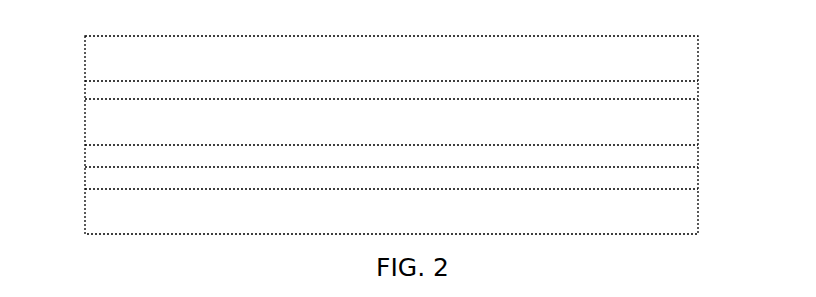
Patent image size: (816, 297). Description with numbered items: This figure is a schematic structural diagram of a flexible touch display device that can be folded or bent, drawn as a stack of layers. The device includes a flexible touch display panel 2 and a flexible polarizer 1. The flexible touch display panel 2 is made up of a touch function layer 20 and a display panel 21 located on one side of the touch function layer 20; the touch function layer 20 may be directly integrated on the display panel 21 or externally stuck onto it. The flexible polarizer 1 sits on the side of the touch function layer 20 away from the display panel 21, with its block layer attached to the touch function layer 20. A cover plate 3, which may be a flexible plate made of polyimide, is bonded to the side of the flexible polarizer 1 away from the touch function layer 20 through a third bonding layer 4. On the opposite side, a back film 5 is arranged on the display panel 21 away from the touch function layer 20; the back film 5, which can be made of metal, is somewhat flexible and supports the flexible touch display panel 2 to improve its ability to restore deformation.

The flexible polarizer 1 is at (84, 122).
The flexible touch display panel 2 is at (758, 148).
The cover plate 3 is at (84, 63).
The third bonding layer 4 is at (699, 91).
The back film 5 is at (84, 208).
The touch function layer 20 is at (699, 156).
The display panel 21 is at (699, 176).